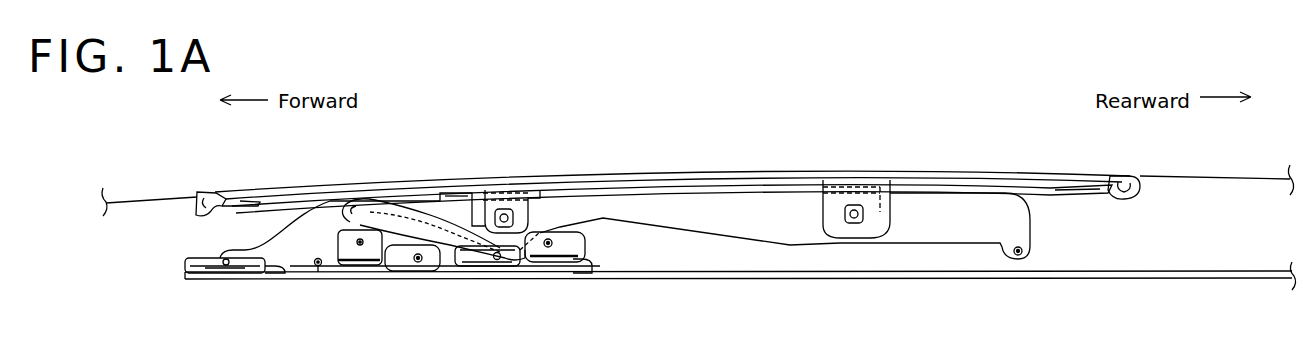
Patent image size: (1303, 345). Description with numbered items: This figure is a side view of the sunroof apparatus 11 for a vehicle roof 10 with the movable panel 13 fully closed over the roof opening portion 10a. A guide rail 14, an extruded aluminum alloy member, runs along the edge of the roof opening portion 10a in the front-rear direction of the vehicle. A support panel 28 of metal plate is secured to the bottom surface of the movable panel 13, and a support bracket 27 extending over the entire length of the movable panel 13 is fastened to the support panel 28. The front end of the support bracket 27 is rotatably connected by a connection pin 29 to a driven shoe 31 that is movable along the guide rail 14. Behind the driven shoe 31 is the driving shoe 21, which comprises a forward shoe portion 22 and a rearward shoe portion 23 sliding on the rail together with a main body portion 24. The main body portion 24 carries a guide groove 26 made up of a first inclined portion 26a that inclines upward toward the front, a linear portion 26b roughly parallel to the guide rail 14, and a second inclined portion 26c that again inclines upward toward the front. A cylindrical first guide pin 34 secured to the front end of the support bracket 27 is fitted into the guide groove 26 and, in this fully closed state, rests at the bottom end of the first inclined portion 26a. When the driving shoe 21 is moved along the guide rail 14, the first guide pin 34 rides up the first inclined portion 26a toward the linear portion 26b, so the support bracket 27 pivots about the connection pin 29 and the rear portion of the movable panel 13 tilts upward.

The roof 10 is at (1260, 178).
The roof opening portion 10a is at (200, 190).
The sunroof apparatus 11 is at (1151, 160).
The movable panel 13 is at (770, 172).
The guide rail 14 is at (752, 281).
The driving shoe 21 is at (468, 224).
The shoe portion 22 is at (318, 270).
The shoe portion 23 is at (588, 262).
The main body portion 24 is at (525, 240).
The guide groove 26 is at (439, 272).
The first inclined portion 26a is at (497, 274).
The linear portion 26b is at (437, 258).
The second inclined portion 26c is at (384, 242).
The support bracket 27 is at (1020, 228).
The support panel 28 is at (530, 205).
The connection pin 29 is at (220, 282).
The driven shoe 31 is at (282, 280).
The first guide pin 34 is at (522, 254).